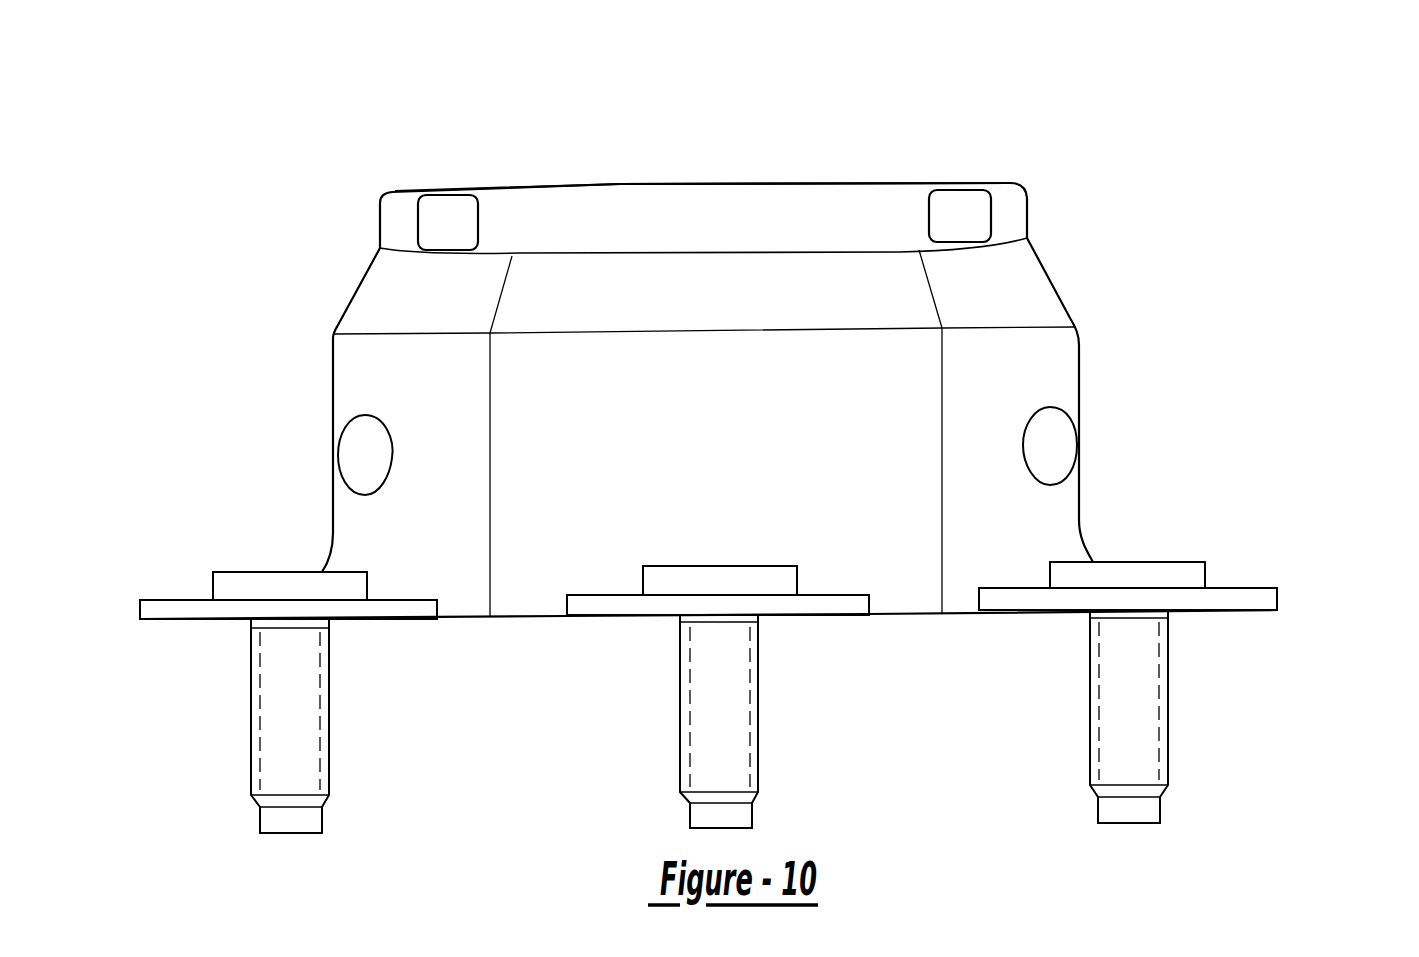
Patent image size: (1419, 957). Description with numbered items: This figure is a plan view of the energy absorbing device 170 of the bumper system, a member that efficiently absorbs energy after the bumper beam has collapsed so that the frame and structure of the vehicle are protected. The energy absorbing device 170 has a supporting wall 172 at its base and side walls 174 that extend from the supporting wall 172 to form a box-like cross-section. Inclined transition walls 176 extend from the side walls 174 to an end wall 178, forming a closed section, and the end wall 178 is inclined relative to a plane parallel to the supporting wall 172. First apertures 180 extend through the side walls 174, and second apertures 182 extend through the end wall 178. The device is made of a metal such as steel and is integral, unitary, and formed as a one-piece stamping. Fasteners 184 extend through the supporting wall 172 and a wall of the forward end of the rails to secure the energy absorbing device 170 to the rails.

The energy absorbing device 170 is at (1278, 597).
The supporting wall 172 is at (160, 610).
The side walls 174 is at (1050, 368).
The inclined transition walls 176 is at (372, 290).
The end wall 178 is at (792, 208).
The first apertures 180 is at (348, 447).
The second apertures 182 is at (448, 196).
The fasteners 184 is at (295, 715).